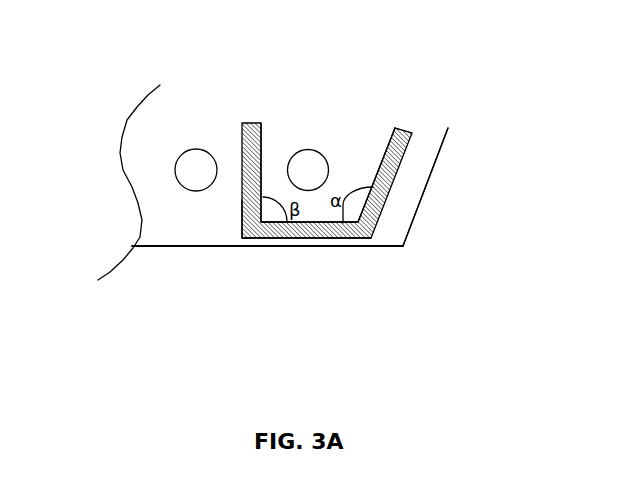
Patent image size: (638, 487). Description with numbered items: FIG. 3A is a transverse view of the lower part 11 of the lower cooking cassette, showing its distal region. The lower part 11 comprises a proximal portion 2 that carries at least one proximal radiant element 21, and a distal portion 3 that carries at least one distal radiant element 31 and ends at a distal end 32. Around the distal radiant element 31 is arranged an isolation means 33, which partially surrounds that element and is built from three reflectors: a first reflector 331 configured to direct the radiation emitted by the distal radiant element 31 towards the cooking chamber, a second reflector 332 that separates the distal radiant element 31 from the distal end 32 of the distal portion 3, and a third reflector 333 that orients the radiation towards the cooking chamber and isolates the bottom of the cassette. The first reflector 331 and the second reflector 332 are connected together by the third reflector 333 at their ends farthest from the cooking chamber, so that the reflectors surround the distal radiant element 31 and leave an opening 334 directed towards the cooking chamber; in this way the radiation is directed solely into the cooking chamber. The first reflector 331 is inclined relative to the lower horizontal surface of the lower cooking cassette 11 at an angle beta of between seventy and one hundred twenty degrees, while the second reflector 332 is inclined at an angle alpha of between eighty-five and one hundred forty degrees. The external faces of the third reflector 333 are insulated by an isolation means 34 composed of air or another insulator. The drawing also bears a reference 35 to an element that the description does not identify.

The proximal portion 2 is at (122, 273).
The lower part 11 is at (162, 253).
The proximal radiant element 21 is at (196, 148).
The distal portion 3 is at (382, 250).
The distal radiant element 31 is at (330, 150).
The distal end 32 is at (412, 238).
The isolation means 33 is at (361, 182).
The isolation means of external faces 34 is at (298, 253).
The inclined wall 35 is at (404, 176).
The first reflector 331 is at (234, 226).
The second reflector 332 is at (413, 133).
The third reflector 333 is at (273, 222).
The opening 334 is at (325, 128).